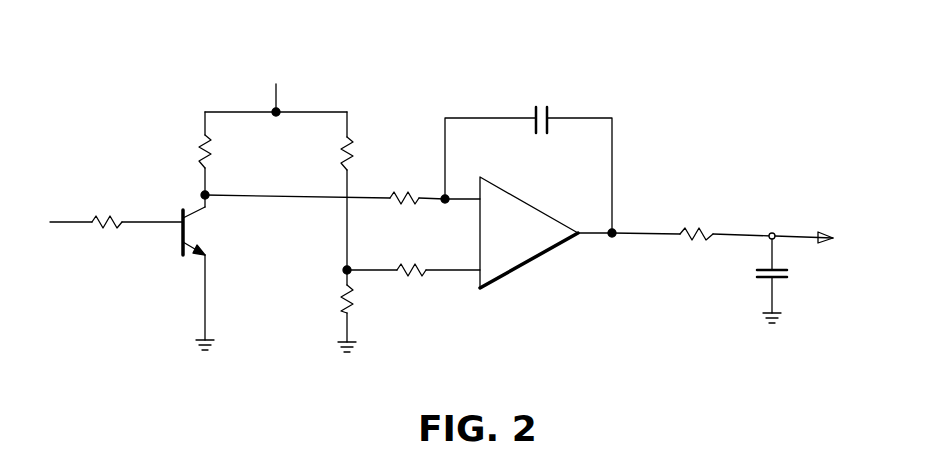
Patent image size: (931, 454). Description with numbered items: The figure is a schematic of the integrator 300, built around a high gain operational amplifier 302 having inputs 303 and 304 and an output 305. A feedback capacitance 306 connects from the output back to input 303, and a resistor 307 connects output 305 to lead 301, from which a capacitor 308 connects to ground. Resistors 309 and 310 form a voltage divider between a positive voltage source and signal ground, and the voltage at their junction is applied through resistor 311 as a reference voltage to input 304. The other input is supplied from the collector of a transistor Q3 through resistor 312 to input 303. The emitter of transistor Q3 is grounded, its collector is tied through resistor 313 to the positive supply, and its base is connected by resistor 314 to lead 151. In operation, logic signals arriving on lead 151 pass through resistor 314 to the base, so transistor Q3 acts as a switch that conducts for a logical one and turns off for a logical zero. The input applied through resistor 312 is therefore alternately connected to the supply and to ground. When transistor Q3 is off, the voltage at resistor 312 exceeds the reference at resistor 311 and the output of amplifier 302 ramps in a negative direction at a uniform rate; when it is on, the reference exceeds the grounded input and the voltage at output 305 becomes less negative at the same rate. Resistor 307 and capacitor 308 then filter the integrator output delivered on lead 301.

The lead 151 is at (62, 217).
The integrator 300 is at (424, 89).
The lead 301 is at (789, 234).
The high gain operational amplifier 302 is at (537, 208).
The input 303 is at (466, 203).
The input 304 is at (456, 275).
The output 305 is at (598, 238).
The feedback capacitance 306 is at (538, 107).
The resistor 307 is at (697, 248).
The capacitor 308 is at (762, 279).
The resistor 309 is at (352, 152).
The resistor 310 is at (341, 303).
The resistor 311 is at (412, 258).
The resistor 312 is at (410, 184).
The resistor 313 is at (196, 164).
The resistor 314 is at (123, 219).
The transistor Q3 is at (205, 270).